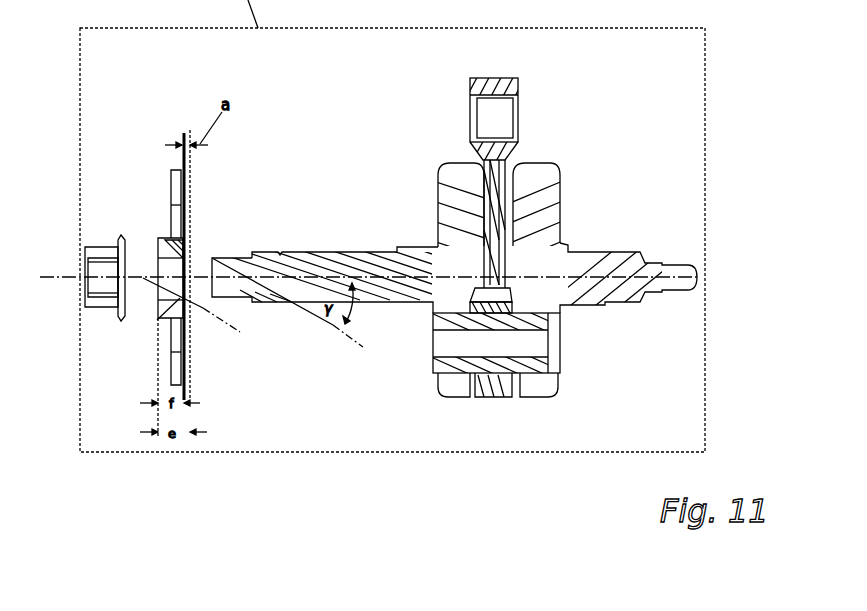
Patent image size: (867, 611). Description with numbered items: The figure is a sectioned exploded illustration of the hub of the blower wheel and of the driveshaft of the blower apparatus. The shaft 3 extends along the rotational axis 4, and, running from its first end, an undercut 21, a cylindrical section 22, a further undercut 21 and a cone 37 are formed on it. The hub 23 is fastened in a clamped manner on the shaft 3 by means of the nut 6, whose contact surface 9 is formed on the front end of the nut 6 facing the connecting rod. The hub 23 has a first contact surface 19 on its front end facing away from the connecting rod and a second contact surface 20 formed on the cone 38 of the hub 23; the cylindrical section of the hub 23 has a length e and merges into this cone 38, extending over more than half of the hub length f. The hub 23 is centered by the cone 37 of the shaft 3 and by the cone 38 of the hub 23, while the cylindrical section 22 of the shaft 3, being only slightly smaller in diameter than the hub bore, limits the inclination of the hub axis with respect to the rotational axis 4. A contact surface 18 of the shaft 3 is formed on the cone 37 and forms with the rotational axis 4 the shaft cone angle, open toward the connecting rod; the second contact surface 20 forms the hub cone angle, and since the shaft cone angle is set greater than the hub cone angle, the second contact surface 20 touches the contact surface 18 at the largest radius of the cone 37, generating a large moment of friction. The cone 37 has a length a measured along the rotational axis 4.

The shaft 3 is at (298, 250).
The rotational axis 4 is at (52, 262).
The nut 6 is at (100, 245).
The contact surface 9 is at (122, 238).
The contact surface 18 is at (282, 251).
The first contact surface 19 is at (176, 299).
The second contact surface 20 is at (185, 248).
The undercut 21 is at (252, 298).
The cylindrical section 22 is at (265, 299).
The hub 23 is at (167, 238).
The cone 37 is at (280, 300).
The cone 38 is at (185, 255).